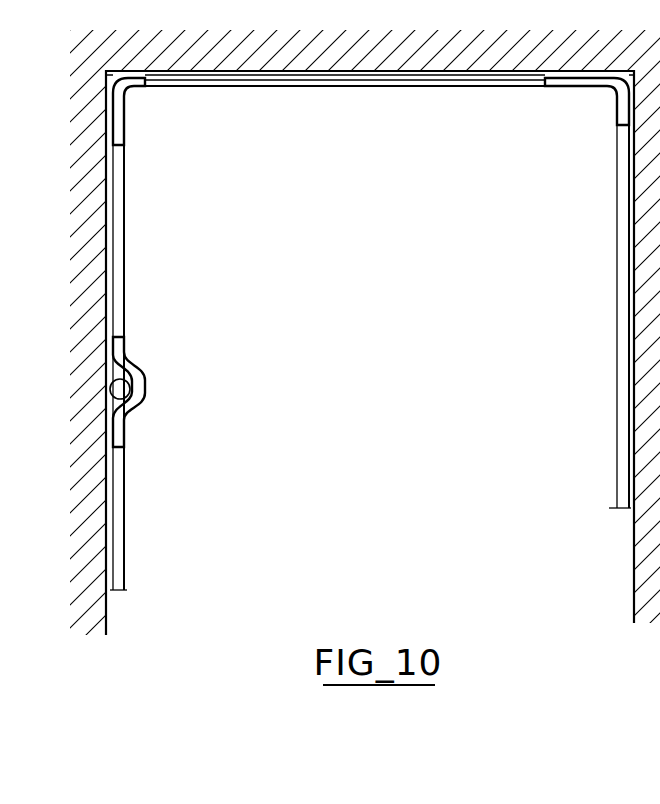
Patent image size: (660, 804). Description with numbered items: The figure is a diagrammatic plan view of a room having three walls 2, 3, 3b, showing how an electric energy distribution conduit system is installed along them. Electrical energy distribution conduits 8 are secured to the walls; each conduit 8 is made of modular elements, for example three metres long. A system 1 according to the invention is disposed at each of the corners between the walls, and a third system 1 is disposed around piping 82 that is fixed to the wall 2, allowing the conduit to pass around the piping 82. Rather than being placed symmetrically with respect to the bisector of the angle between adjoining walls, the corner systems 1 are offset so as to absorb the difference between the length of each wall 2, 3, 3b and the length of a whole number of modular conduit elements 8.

The system 1 is at (118, 98).
The wall 2 is at (107, 217).
The wall 3 is at (375, 71).
The wall 3b is at (632, 366).
The electrical energy distribution conduit 8 is at (487, 78).
The piping 82 is at (125, 392).